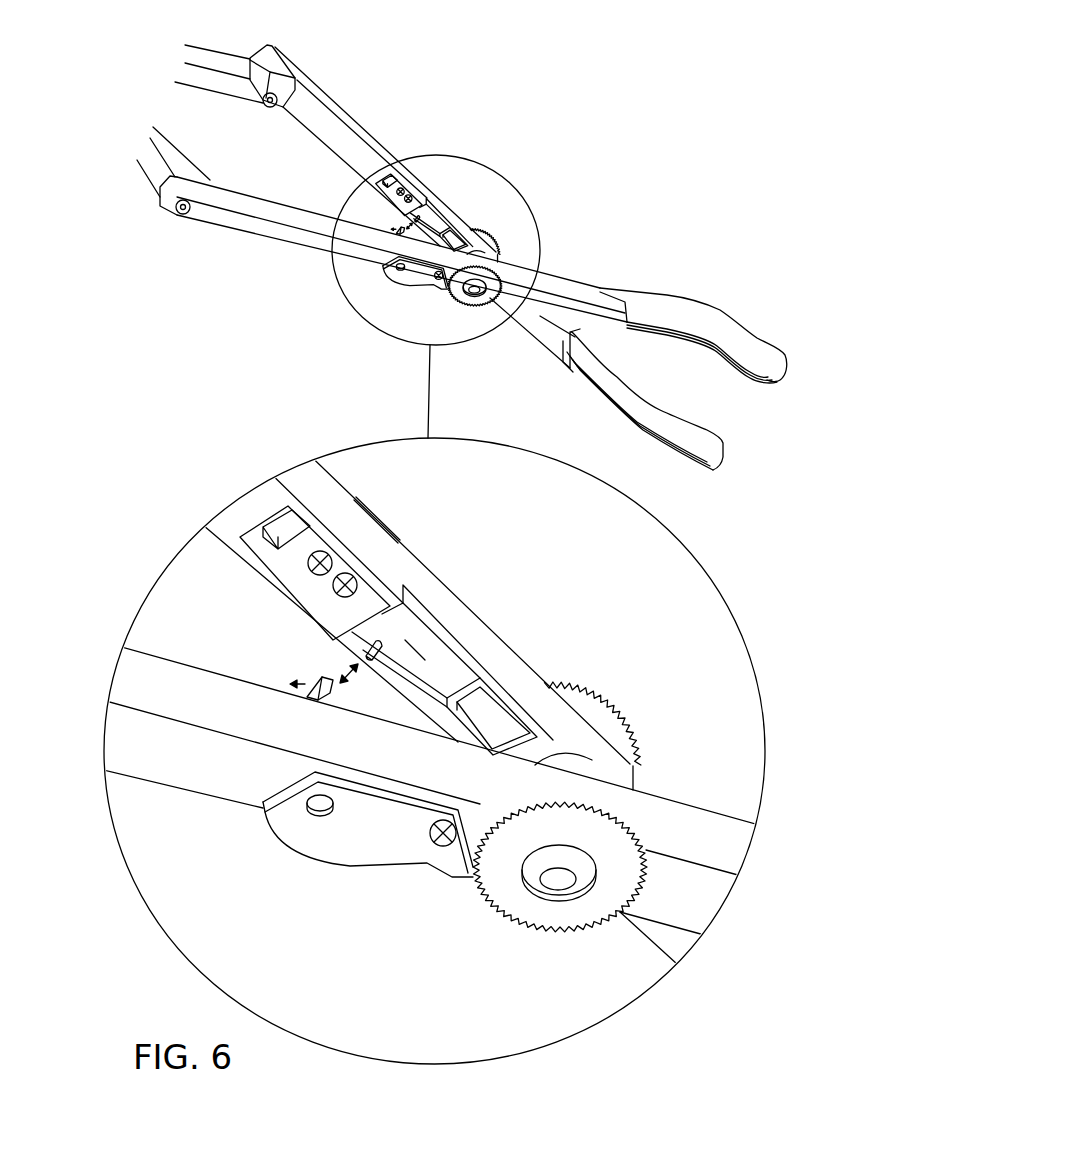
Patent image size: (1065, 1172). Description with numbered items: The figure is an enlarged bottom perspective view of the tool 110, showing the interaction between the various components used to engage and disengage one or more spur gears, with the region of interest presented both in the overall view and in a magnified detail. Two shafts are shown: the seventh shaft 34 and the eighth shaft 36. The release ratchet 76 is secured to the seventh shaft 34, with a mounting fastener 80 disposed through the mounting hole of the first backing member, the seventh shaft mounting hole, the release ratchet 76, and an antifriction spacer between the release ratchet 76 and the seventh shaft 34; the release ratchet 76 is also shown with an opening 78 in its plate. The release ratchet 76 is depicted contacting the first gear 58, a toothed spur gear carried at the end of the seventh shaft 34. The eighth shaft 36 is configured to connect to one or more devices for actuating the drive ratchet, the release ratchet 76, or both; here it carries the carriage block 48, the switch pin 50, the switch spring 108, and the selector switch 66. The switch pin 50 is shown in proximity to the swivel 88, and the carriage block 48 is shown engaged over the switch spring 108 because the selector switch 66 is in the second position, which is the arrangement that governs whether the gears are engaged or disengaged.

The tool 110 is at (114, 63).
The seventh shaft 34 is at (188, 792).
The eighth shaft 36 is at (518, 653).
The carriage block 48 is at (419, 620).
The switch pin 50 is at (363, 654).
The first gear 58 is at (522, 915).
The selector switch 66 is at (375, 515).
The release ratchet 76 is at (355, 865).
The hole 78 is at (318, 813).
The mounting fastener 80 is at (443, 846).
The swivel 88 is at (318, 678).
The switch spring 108 is at (414, 652).